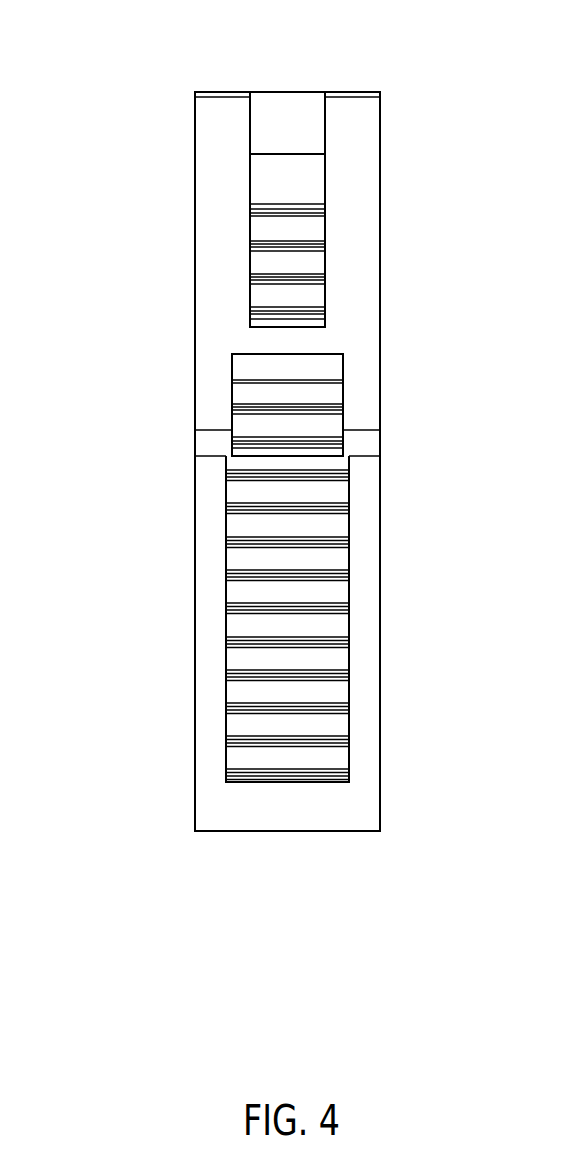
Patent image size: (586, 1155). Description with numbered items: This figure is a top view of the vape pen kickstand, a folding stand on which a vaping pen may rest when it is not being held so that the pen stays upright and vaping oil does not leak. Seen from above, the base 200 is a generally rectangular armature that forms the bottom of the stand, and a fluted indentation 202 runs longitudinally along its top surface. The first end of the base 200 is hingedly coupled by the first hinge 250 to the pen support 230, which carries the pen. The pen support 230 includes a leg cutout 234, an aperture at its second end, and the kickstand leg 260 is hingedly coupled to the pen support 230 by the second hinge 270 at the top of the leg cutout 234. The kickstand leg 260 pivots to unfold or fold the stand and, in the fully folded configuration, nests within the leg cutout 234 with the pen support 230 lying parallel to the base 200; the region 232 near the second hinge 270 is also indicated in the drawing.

The base 200 is at (367, 608).
The fluted indentation 202 is at (225, 696).
The pen support 230 is at (368, 275).
The middle block 232 is at (232, 368).
The leg cutout 234 is at (327, 193).
The first hinge 250 is at (289, 108).
The kickstand leg 260 is at (198, 269).
The second hinge 270 is at (315, 320).